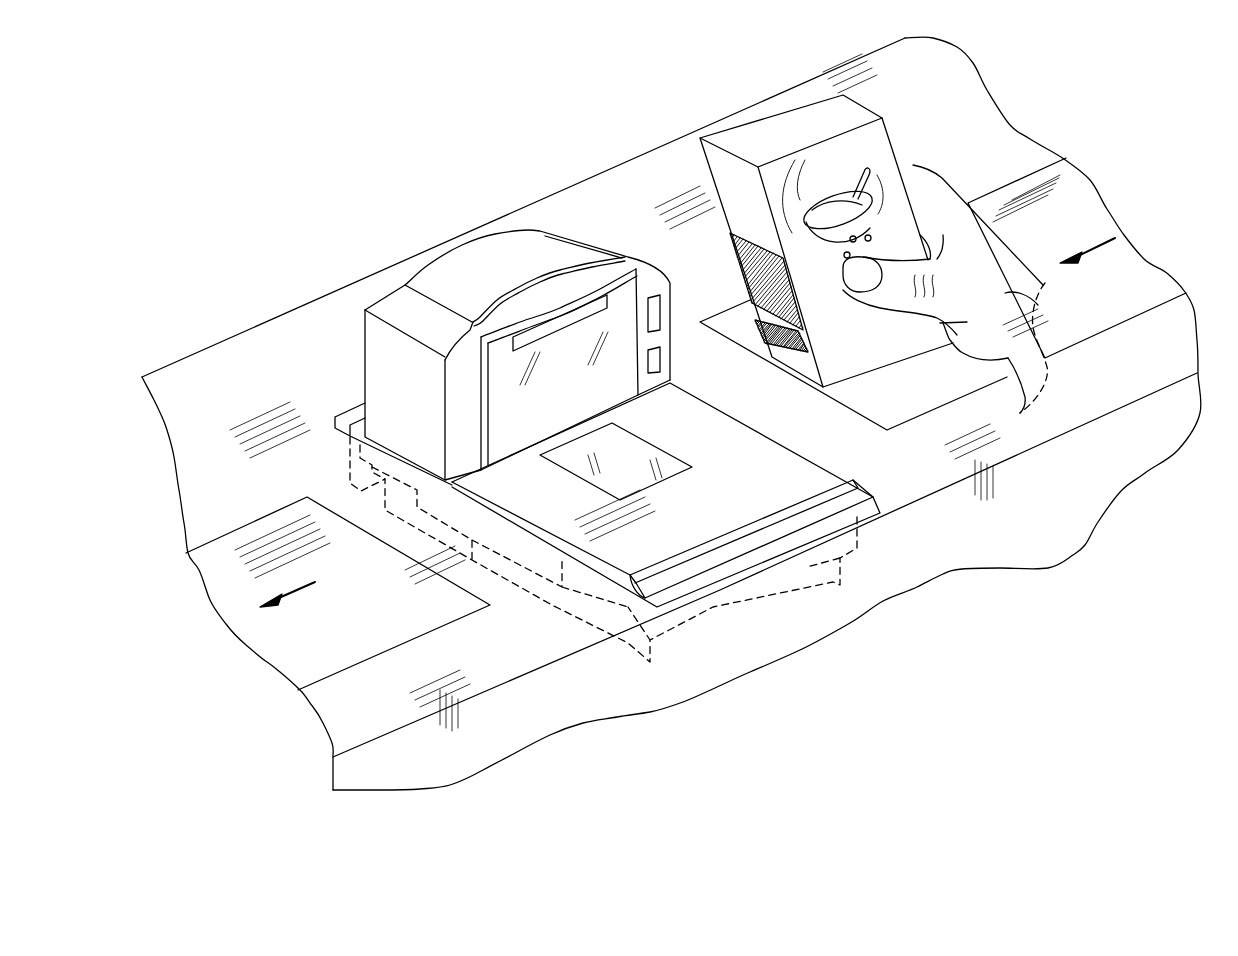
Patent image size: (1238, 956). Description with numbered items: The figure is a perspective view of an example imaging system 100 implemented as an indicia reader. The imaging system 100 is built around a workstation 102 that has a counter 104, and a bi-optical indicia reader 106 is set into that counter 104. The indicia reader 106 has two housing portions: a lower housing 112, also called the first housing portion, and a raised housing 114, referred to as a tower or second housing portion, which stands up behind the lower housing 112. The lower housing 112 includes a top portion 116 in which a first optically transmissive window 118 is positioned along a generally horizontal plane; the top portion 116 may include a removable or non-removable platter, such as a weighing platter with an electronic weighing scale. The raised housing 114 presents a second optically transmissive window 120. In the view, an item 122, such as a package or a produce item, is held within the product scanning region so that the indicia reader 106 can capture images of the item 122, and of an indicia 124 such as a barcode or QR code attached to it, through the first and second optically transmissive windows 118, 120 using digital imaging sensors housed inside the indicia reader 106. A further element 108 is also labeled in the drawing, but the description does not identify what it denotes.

The imaging system 100 is at (187, 141).
The workstation 102 is at (640, 133).
The counter 104 is at (986, 103).
The bi-optical indicia reader 106 is at (378, 395).
The item 108 is at (1040, 305).
The lower housing 112 is at (607, 682).
The raised housing 114 is at (426, 250).
The top portion 116 is at (600, 552).
The first optically transmissive window 118 is at (640, 485).
The second optically transmissive window 120 is at (499, 313).
The item 122 is at (891, 181).
The indicia 124 is at (806, 366).